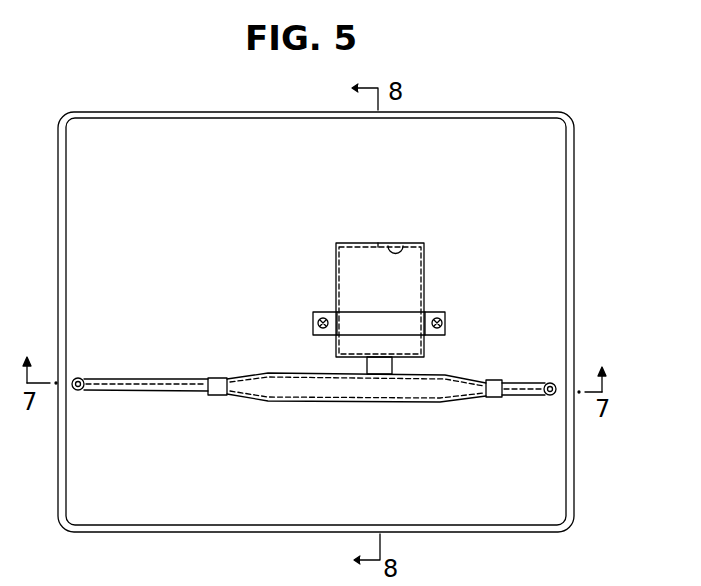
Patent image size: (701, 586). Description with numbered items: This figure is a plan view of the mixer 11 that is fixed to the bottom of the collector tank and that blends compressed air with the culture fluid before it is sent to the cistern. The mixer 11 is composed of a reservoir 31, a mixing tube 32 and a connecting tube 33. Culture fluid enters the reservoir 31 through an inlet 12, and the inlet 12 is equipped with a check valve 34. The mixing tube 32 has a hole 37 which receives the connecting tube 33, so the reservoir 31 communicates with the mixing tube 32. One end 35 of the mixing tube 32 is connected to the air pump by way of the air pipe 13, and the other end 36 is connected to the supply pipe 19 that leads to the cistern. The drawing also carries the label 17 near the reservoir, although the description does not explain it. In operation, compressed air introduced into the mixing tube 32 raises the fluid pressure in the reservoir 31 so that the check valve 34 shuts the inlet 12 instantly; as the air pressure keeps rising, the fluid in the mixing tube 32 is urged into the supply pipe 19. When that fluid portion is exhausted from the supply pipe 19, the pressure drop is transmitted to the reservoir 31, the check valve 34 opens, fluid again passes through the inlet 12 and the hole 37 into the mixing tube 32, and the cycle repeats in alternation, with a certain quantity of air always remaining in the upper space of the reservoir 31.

The mixer 11 is at (574, 242).
The inlet 12 is at (378, 243).
The air pipe 13 is at (547, 382).
The mounting block assembly 17 is at (425, 250).
The supply pipe 19 is at (110, 378).
The reservoir 31 is at (418, 284).
The mixing tube 32 is at (340, 396).
The connecting tube 33 is at (393, 370).
The check valve 34 is at (405, 248).
The one end of the mixing tube 35 is at (497, 398).
The other end of the mixing tube 36 is at (217, 396).
The hole 37 is at (380, 378).